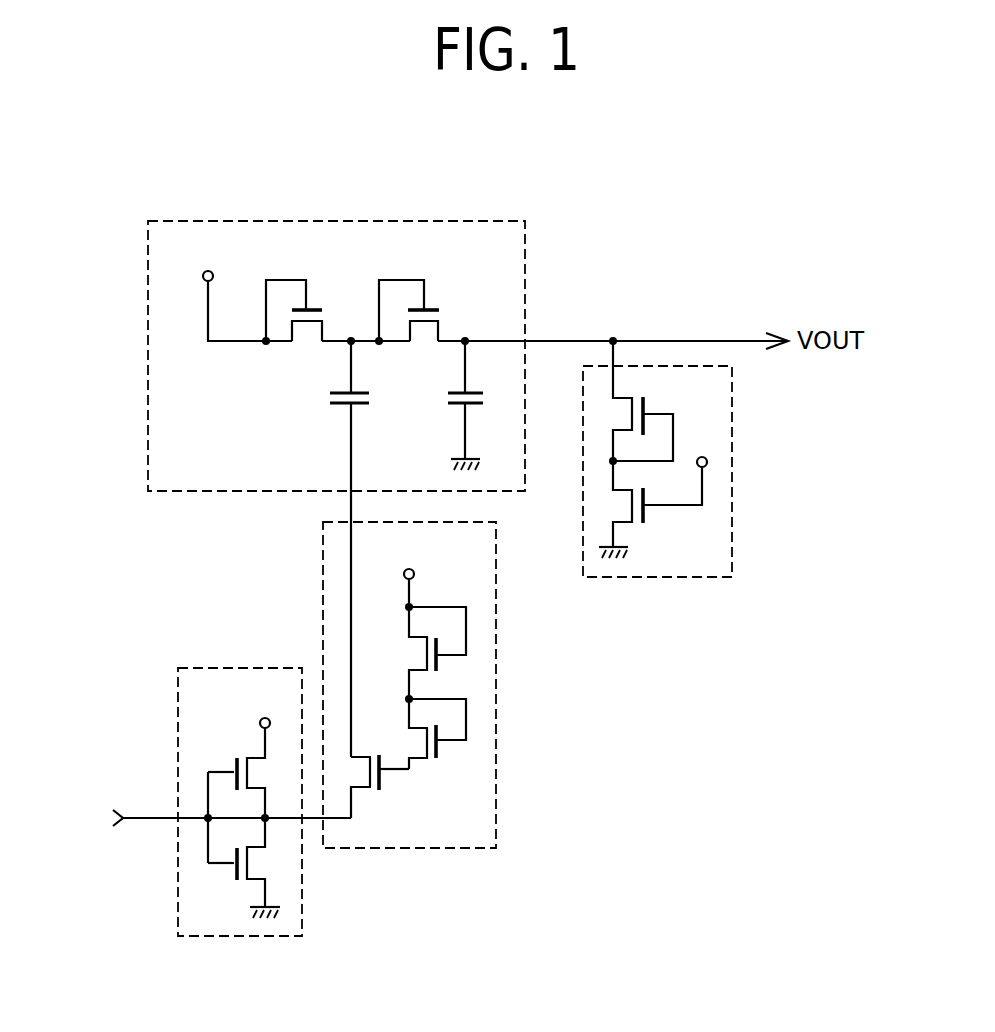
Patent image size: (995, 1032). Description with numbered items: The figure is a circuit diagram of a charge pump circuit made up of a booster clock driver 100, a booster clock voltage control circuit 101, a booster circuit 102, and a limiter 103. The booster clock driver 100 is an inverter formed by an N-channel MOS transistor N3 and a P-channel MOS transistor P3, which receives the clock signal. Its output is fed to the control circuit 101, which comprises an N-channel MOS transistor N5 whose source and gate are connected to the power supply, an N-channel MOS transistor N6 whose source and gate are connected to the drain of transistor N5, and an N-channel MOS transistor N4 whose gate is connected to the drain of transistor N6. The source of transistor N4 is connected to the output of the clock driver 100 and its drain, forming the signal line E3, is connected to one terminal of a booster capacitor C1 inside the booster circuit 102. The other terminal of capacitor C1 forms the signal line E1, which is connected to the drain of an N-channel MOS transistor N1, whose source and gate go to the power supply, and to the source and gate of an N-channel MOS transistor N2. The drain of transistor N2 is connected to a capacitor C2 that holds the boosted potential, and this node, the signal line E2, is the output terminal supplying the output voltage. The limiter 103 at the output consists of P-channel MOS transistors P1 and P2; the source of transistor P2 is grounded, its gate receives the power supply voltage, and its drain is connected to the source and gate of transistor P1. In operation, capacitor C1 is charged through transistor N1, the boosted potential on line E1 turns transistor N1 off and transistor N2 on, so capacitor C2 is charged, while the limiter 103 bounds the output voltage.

The booster clock driver 100 is at (219, 809).
The booster clock voltage control circuit 101 is at (453, 685).
The booster circuit 102 is at (336, 392).
The limiter 103 is at (702, 457).
The N-channel MOS transistor N1 is at (295, 329).
The N-channel MOS transistor N2 is at (408, 329).
The N-channel MOS transistor N3 is at (266, 868).
The N-channel MOS transistor N4 is at (368, 786).
The N-channel MOS transistor N5 is at (417, 651).
The N-channel MOS transistor N6 is at (422, 732).
The P-channel MOS transistor P1 is at (630, 403).
The P-channel MOS transistor P2 is at (647, 507).
The P-channel MOS transistor P3 is at (264, 768).
The booster capacitor C1 is at (364, 389).
The capacitor C2 is at (480, 405).
The signal line E1 is at (350, 336).
The signal line E2 is at (565, 339).
The signal line E3 is at (352, 646).